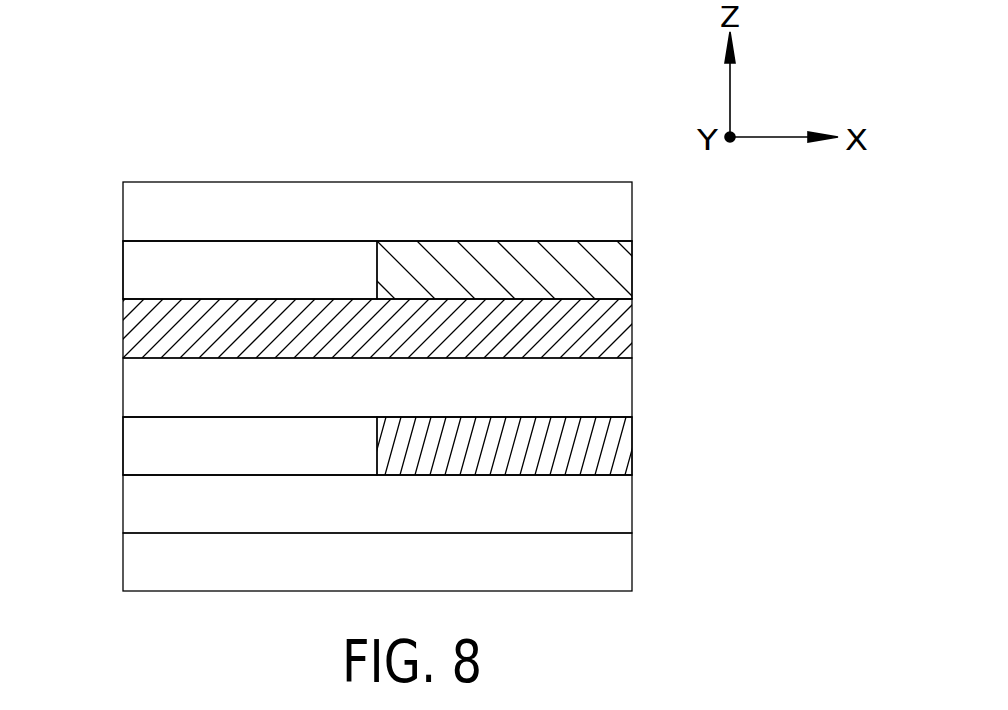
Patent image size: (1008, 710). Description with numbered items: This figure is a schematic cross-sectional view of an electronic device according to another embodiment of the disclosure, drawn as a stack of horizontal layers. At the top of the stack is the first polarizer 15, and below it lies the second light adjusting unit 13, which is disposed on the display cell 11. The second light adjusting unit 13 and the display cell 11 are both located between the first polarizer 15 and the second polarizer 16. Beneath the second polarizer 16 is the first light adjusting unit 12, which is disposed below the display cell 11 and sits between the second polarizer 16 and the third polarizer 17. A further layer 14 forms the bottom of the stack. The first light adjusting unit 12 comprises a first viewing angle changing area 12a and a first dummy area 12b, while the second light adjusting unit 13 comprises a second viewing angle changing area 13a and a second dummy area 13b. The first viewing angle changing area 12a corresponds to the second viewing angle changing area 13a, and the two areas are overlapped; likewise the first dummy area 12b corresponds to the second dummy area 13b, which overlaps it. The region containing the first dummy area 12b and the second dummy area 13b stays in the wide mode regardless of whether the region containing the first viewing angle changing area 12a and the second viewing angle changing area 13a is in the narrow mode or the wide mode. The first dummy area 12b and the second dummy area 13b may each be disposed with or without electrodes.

The display cell 11 is at (633, 325).
The first light adjusting unit 12 is at (633, 428).
The first viewing angle changing area 12a is at (615, 463).
The first dummy area 12b is at (145, 448).
The second light adjusting unit 13 is at (633, 253).
The second viewing angle changing area 13a is at (605, 282).
The second dummy area 13b is at (145, 272).
The lower layer 14 is at (633, 573).
The first polarizer 15 is at (633, 209).
The second polarizer 16 is at (633, 383).
The third polarizer 17 is at (633, 502).